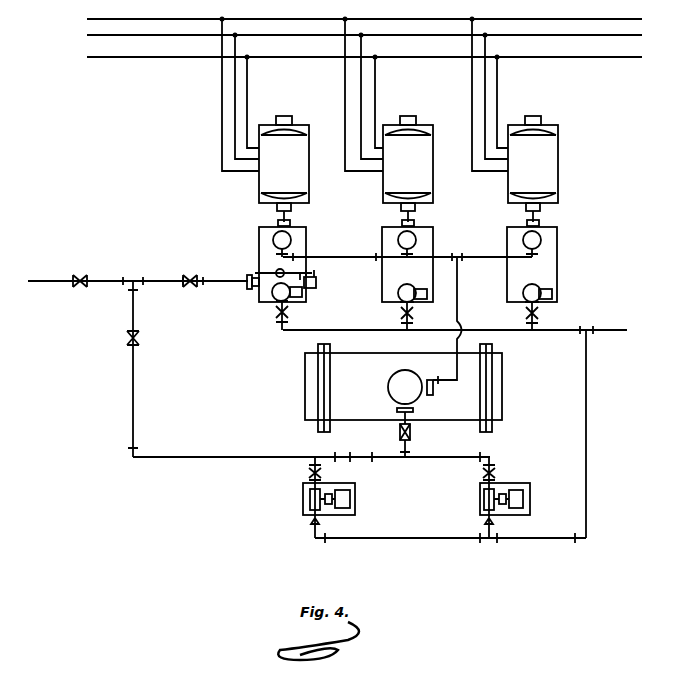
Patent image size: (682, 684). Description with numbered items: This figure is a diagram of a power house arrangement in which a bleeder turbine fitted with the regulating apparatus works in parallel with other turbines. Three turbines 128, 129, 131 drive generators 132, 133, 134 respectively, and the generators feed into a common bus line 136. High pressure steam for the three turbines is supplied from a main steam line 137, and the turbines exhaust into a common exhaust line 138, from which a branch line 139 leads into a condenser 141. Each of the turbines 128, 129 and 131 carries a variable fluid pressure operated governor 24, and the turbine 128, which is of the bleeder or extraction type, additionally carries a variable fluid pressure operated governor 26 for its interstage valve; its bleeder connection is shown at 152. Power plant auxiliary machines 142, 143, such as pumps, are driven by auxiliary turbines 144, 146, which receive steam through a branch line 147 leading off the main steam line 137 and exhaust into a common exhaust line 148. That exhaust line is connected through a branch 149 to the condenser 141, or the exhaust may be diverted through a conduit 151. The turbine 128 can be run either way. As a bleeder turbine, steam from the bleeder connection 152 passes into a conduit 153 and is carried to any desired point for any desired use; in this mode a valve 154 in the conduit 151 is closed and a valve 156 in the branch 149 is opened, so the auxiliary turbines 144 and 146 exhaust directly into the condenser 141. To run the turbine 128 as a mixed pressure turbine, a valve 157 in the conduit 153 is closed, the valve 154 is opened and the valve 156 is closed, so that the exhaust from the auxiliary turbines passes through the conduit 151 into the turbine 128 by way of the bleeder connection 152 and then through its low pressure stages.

The common bus line 136 is at (676, 56).
The generator 132 is at (258, 178).
The generator 133 is at (388, 180).
The generator 134 is at (512, 180).
The turbine 128 is at (258, 240).
The turbine 129 is at (382, 239).
The turbine 131 is at (508, 238).
The common exhaust line 138 is at (351, 258).
The branch line 139 is at (469, 293).
The variable fluid pressure operated governor 26 is at (317, 286).
The bleeder connection 152 is at (251, 290).
The variable fluid pressure operated governor 24 is at (300, 311).
The main steam line 137 is at (612, 328).
The condenser 141 is at (499, 380).
The branch line 147 is at (588, 408).
The valve 156 is at (412, 433).
The branch 149 is at (410, 448).
The common exhaust line 148 is at (358, 457).
The power plant auxiliary machine 142 is at (355, 505).
The power plant auxiliary machine 143 is at (530, 500).
The turbine 144 is at (311, 504).
The turbine 146 is at (486, 509).
The conduit 151 is at (134, 408).
The valve 154 is at (140, 340).
The conduit 153 is at (106, 289).
The valve 157 is at (84, 275).